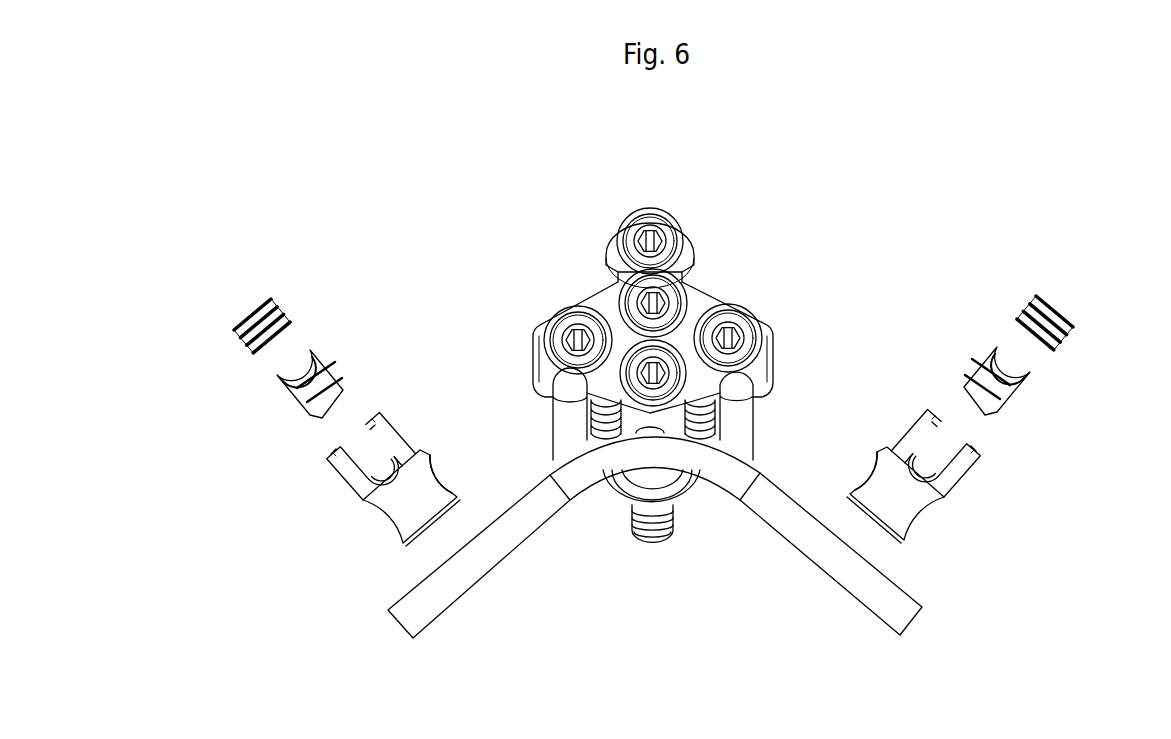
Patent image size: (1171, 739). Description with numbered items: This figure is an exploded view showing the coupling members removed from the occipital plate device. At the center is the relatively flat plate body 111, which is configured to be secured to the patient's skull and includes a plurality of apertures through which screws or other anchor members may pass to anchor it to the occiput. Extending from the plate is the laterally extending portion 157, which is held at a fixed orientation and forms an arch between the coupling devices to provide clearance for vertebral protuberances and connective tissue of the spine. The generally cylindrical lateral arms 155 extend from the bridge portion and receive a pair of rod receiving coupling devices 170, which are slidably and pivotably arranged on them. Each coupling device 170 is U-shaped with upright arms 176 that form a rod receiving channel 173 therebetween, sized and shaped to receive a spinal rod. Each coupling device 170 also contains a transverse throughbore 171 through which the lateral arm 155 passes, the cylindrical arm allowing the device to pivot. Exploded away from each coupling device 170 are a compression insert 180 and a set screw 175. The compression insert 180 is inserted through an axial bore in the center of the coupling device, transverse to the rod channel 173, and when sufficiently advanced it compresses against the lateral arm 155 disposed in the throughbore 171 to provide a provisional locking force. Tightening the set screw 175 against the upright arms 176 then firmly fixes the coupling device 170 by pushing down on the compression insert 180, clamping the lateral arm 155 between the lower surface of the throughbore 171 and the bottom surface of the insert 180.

The plate body 111 is at (717, 303).
The lateral arms 155 is at (491, 560).
The laterally extending portion 157 is at (713, 468).
The coupling device 170 is at (408, 493).
The throughbore 171 is at (444, 478).
The rod receiving channel 173 is at (360, 440).
The set screw 175 is at (243, 345).
The upright arms 176 is at (393, 427).
The compression insert 180 is at (303, 385).